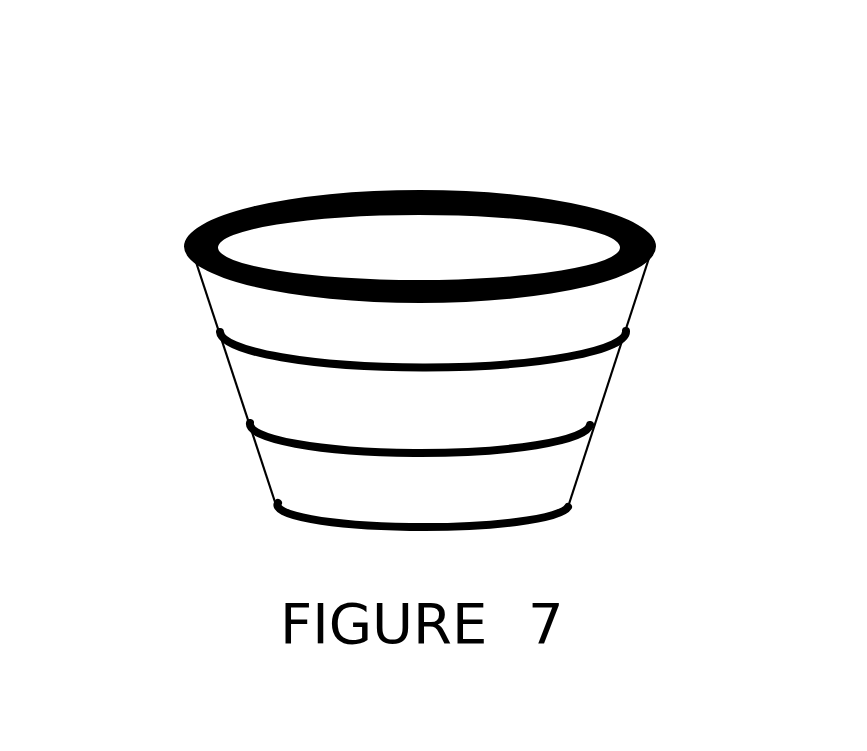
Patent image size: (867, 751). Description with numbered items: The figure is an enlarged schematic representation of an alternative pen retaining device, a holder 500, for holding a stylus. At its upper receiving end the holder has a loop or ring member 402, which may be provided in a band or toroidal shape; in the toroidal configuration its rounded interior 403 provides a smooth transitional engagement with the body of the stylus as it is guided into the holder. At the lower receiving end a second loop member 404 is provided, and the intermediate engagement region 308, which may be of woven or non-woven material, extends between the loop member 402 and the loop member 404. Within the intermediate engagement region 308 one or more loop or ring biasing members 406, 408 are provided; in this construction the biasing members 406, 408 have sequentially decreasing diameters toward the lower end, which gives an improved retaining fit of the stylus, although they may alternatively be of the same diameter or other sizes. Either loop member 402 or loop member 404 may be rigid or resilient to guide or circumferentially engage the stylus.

The holder 500 is at (238, 160).
The rounded interior 403 is at (305, 197).
The loop member 402 is at (651, 224).
The biasing member 408 is at (626, 330).
The intermediate engagement region 308 is at (578, 403).
The biasing member 406 is at (555, 442).
The loop member 404 is at (264, 497).